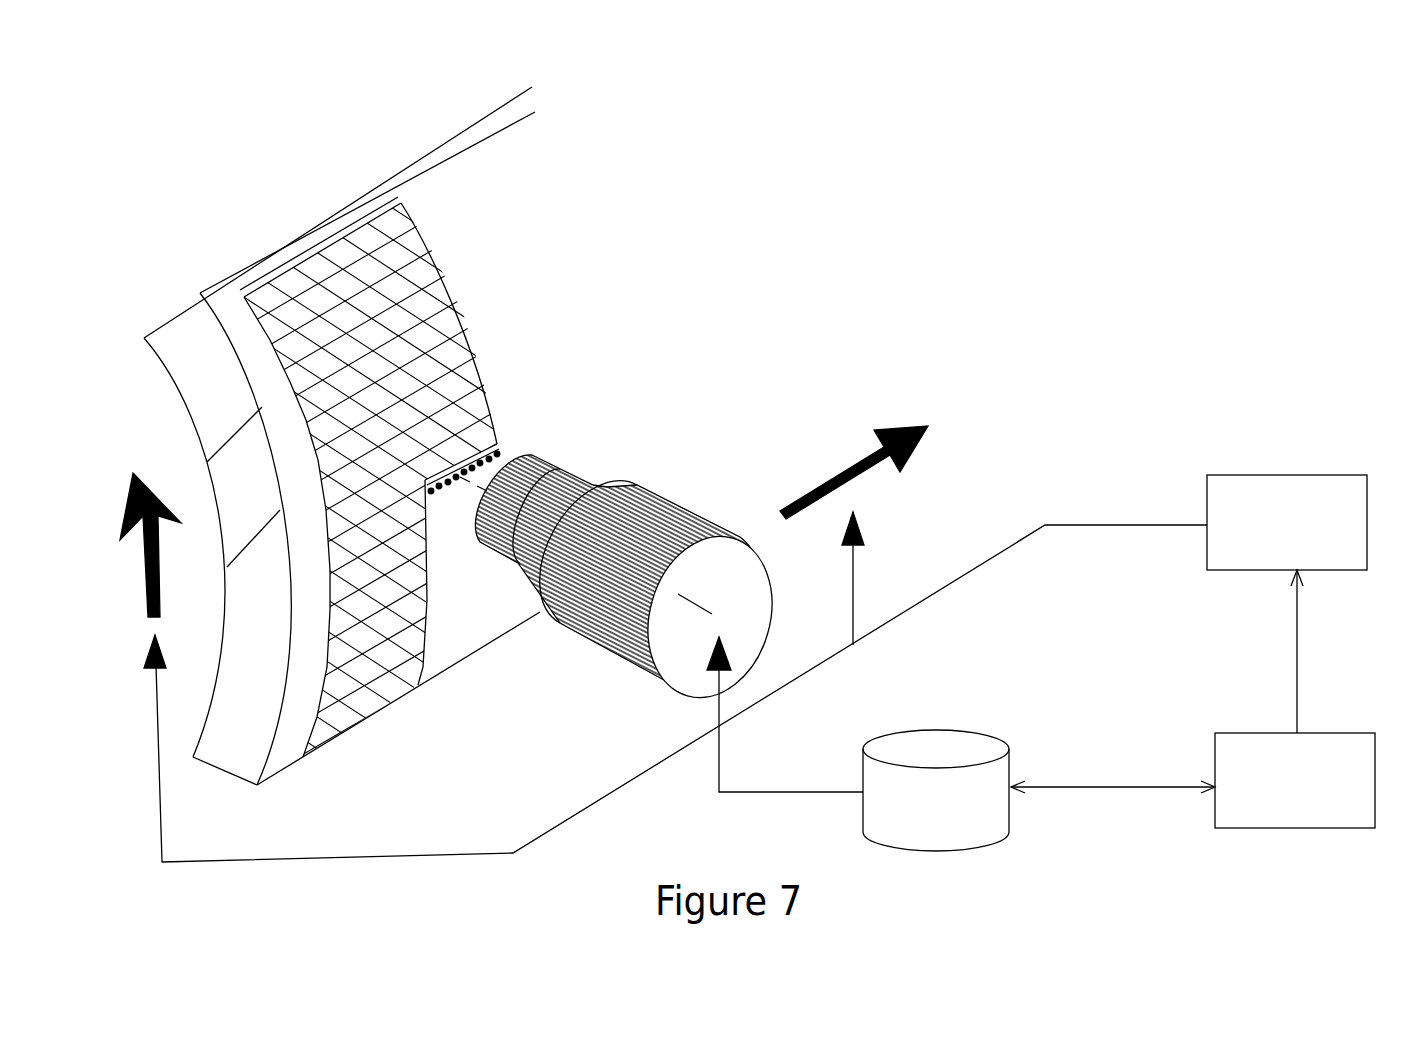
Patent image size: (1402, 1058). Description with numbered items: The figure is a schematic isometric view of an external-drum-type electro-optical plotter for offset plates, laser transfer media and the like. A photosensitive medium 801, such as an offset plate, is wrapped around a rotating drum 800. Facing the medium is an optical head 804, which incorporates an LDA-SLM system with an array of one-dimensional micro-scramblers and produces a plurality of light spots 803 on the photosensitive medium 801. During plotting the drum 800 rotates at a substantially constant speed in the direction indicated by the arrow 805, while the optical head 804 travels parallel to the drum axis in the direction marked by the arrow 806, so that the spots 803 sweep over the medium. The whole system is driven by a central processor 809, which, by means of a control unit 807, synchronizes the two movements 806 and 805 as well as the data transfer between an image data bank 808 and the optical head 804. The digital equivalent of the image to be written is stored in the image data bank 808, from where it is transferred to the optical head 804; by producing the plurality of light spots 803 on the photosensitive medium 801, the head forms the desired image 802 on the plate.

The rotating drum 800 is at (188, 338).
The photosensitive medium 801 is at (503, 137).
The desired image 802 is at (430, 357).
The plurality of spots 803 is at (505, 432).
The optical head 804 is at (628, 662).
The arrow 805 is at (130, 498).
The arrow 806 is at (826, 480).
The control unit 807 is at (1222, 492).
The image data bank 808 is at (948, 751).
The central processor 809 is at (1243, 764).